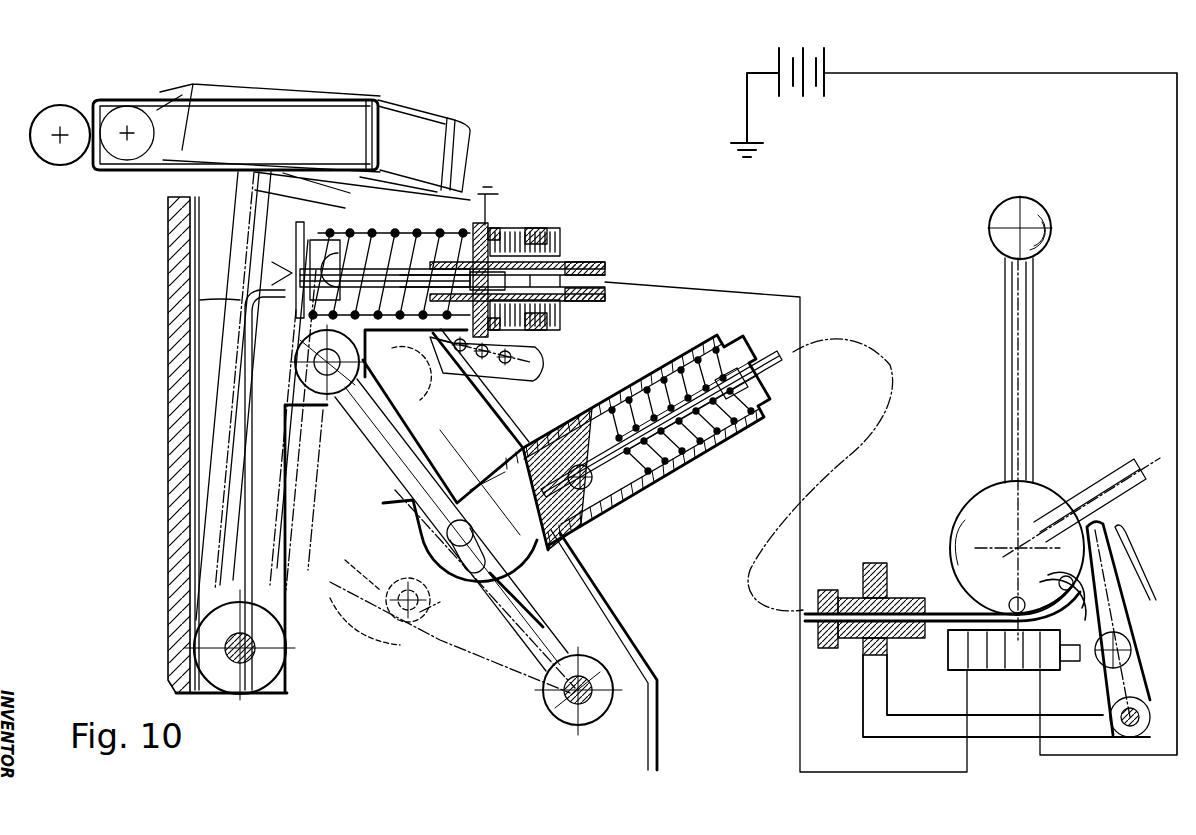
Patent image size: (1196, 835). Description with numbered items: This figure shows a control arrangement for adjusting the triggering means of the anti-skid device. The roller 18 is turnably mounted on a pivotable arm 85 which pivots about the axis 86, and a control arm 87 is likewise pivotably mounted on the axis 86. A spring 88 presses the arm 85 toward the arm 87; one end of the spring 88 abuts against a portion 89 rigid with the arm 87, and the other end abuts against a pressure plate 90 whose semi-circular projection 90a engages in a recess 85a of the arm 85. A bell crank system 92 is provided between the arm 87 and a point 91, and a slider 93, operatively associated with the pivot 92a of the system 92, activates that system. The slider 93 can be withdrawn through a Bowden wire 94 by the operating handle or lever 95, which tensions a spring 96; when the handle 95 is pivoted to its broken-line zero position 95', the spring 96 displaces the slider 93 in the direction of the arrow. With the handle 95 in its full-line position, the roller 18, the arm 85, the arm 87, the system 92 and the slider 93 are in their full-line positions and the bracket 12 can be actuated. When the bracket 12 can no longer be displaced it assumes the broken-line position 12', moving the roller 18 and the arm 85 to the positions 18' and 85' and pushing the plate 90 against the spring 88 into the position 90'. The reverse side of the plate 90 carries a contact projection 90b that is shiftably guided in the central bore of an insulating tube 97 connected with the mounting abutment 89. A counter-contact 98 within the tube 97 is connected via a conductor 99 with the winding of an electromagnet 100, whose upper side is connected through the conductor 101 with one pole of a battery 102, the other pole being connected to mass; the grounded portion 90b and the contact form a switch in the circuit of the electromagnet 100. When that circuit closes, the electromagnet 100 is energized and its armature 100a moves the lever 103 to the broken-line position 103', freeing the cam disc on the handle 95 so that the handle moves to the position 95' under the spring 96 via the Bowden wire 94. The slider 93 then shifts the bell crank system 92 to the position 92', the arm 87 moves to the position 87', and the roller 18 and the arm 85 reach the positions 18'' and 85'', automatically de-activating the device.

The bracket 12 is at (62, 113).
The broken-line position of the bracket 12' is at (235, 113).
The pivotable arm 85 is at (303, 332).
The broken-line position of the arm 85' is at (274, 323).
The de-activated position of the arm 85'' is at (336, 329).
The recess 85a is at (220, 300).
The roller 18 is at (415, 129).
The broken-line position of the roller 18' is at (462, 137).
The de-activated position of the roller 18'' is at (489, 147).
The axis 86 is at (222, 640).
The control arm 87 is at (227, 445).
The shifted position of the control arm 87' is at (208, 490).
The spring 88 is at (497, 228).
The portion rigid with the control arm 89 is at (541, 349).
The pressure plate 90 is at (363, 361).
The semi-circular projection 90a is at (277, 258).
The broken-line position of the pressure plate 90' is at (389, 254).
The contact projection 90b is at (403, 267).
The point 91 is at (555, 707).
The bell crank system 92 is at (462, 525).
The broken-line position of the bell crank system 92' is at (452, 595).
The pivot 92a is at (583, 538).
The slider 93 is at (507, 567).
The Bowden wire 94 is at (893, 362).
The control or operating handle or lever 95 is at (1017, 418).
The broken-line zero position of the handle 95' is at (1081, 491).
The spring 96 is at (657, 378).
The insulating tube 97 is at (580, 262).
The counter-contact 98 is at (558, 306).
The conductor 99 is at (682, 292).
The electromagnet 100 is at (957, 655).
The armature 100a is at (1073, 663).
The conductor 101 is at (1177, 288).
The battery 102 is at (827, 56).
The lever 103 is at (1087, 629).
The broken-line position of the lever 103' is at (1138, 554).